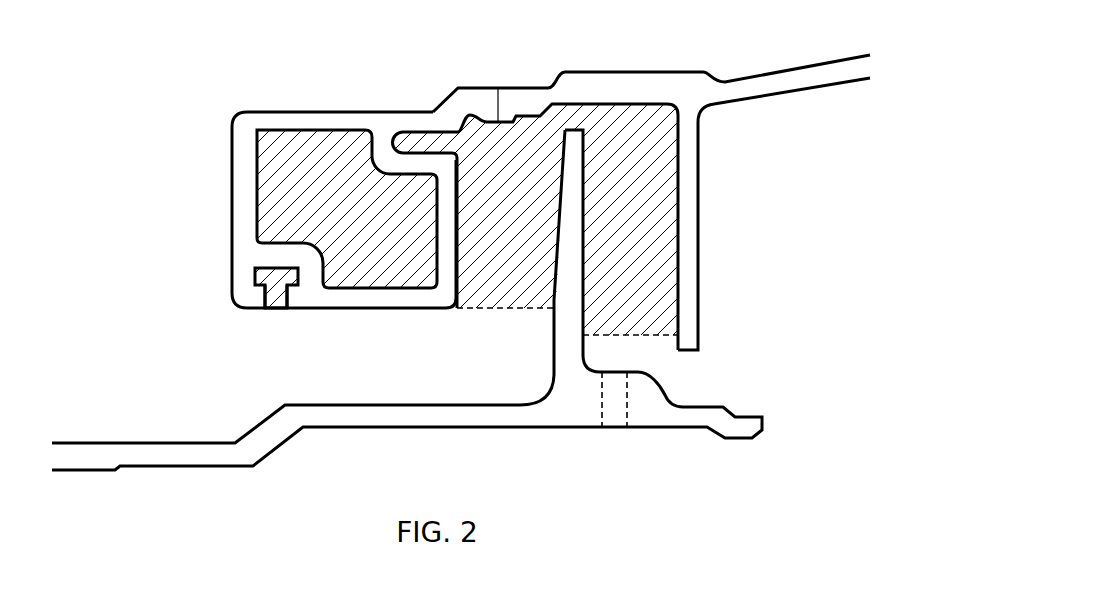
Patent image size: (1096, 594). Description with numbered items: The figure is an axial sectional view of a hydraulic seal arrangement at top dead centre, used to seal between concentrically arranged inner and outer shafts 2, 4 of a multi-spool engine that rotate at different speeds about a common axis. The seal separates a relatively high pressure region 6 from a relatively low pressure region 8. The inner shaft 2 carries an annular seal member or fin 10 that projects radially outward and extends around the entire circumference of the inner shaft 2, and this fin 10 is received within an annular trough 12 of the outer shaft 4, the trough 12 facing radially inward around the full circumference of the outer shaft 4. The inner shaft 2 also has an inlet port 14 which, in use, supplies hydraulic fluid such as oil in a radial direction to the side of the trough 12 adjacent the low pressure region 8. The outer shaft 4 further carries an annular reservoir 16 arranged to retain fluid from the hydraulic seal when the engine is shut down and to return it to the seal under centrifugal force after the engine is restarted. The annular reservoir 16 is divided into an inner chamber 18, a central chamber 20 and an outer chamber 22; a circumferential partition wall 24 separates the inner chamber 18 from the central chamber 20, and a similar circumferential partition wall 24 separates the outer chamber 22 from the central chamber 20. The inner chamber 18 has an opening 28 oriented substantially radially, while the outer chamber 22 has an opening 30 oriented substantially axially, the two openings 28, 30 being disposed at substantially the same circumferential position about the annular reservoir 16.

The inner shaft 2 is at (741, 427).
The outer shaft 4 is at (563, 72).
The high pressure region 6 is at (535, 227).
The low pressure region 8 is at (644, 364).
The fin 10 is at (568, 343).
The trough 12 is at (700, 258).
The inlet port 14 is at (614, 418).
The annular reservoir 16 is at (277, 109).
The inner chamber 18 is at (258, 279).
The central chamber 20 is at (333, 218).
The outer chamber 22 is at (413, 142).
The circumferential partition wall 24 is at (388, 157).
The opening 28 is at (275, 310).
The opening 30 is at (461, 140).